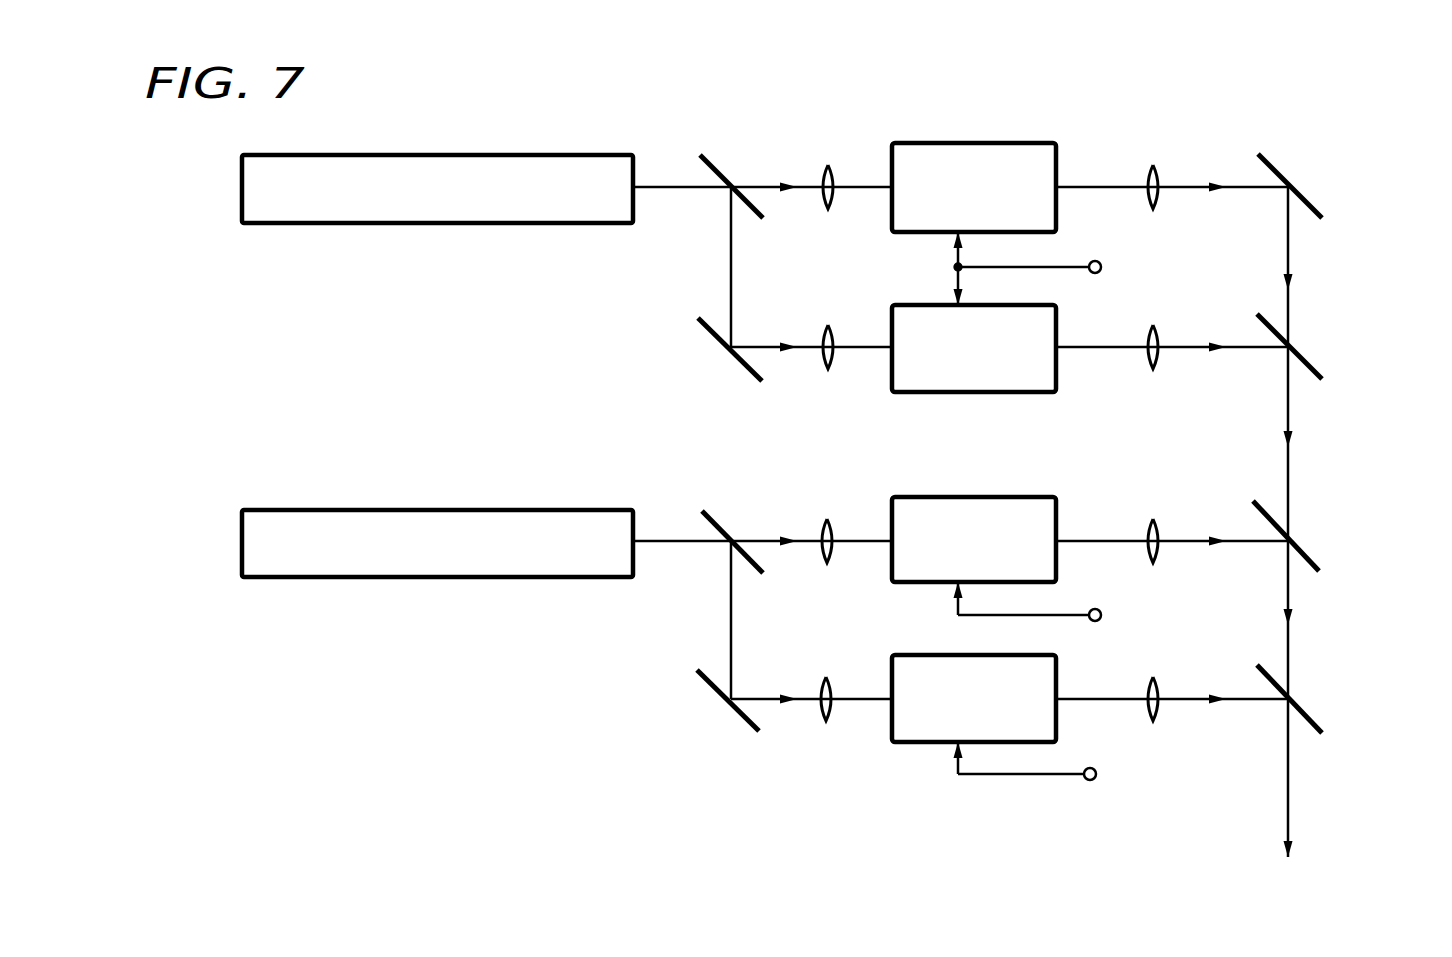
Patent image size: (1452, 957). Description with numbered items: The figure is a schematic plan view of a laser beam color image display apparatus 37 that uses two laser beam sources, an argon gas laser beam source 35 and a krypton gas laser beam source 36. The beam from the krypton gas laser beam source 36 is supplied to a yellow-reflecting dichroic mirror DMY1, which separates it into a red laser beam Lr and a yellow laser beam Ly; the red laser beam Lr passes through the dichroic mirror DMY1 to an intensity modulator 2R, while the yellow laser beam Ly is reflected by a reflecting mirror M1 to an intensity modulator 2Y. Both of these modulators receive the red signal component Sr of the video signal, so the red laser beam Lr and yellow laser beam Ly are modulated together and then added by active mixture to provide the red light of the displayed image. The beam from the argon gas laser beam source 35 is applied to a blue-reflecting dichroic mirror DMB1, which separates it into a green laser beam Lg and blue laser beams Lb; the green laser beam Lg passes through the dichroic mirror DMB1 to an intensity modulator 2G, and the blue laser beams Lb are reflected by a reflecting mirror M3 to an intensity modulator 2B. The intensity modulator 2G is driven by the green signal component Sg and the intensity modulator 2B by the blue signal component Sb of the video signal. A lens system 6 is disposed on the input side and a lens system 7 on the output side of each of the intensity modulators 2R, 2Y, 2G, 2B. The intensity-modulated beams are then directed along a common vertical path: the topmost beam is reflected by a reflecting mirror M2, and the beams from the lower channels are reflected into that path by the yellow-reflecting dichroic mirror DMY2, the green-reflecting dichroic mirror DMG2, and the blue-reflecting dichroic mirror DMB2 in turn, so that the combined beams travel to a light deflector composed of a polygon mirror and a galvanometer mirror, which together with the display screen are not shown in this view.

The laser beam color image display apparatus 37 is at (208, 156).
The krypton gas laser beam source 36 is at (483, 155).
The argon gas laser beam source 35 is at (360, 510).
The yellow-reflecting dichroic mirror DMY1 is at (717, 162).
The blue-reflecting dichroic mirror DMB1 is at (717, 520).
The reflecting mirror M1 is at (710, 335).
The reflecting mirror M2 is at (1317, 207).
The reflecting mirror M3 is at (708, 685).
The lens system 6 is at (836, 167).
The lens system 7 is at (1152, 167).
The intensity modulator 2R is at (1005, 143).
The intensity modulator 2Y is at (1010, 392).
The intensity modulator 2G is at (933, 497).
The intensity modulator 2B is at (927, 742).
The yellow-reflecting dichroic mirror DMY2 is at (1320, 372).
The green-reflecting dichroic mirror DMG2 is at (1313, 558).
The blue-reflecting dichroic mirror DMB2 is at (1313, 722).
The red laser beam Lr is at (768, 190).
The yellow laser beam Ly is at (768, 350).
The green laser beam Lg is at (768, 545).
The blue laser beams Lb is at (766, 703).
The red signal component Sr is at (1045, 268).
The green signal component Sg is at (1049, 606).
The blue signal component Sb is at (1046, 765).